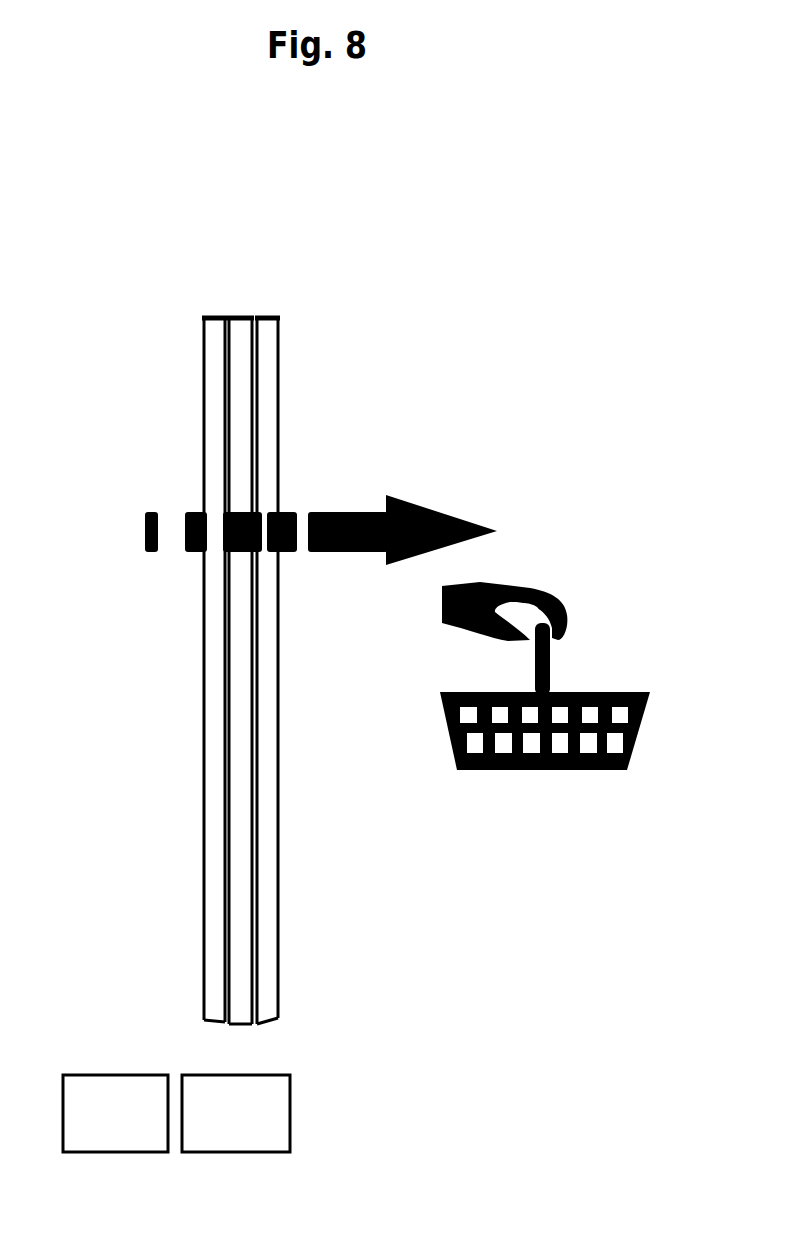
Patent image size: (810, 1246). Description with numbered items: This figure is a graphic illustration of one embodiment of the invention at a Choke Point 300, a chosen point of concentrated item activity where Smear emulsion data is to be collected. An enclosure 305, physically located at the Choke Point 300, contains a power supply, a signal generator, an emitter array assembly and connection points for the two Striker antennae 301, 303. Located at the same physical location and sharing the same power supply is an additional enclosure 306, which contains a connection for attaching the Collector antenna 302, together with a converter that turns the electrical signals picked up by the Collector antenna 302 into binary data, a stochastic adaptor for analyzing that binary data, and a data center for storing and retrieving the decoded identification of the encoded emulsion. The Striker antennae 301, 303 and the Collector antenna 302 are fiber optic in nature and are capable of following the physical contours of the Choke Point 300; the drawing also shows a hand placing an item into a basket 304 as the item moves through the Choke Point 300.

The Choke Point 300 is at (310, 492).
The Striker antenna 301 is at (212, 326).
The Collector antenna 302 is at (238, 322).
The Striker antenna 303 is at (267, 326).
The shopping basket with hand (recipient) 304 is at (627, 685).
The enclosure 305 is at (252, 1024).
The additional enclosure 306 is at (240, 1024).